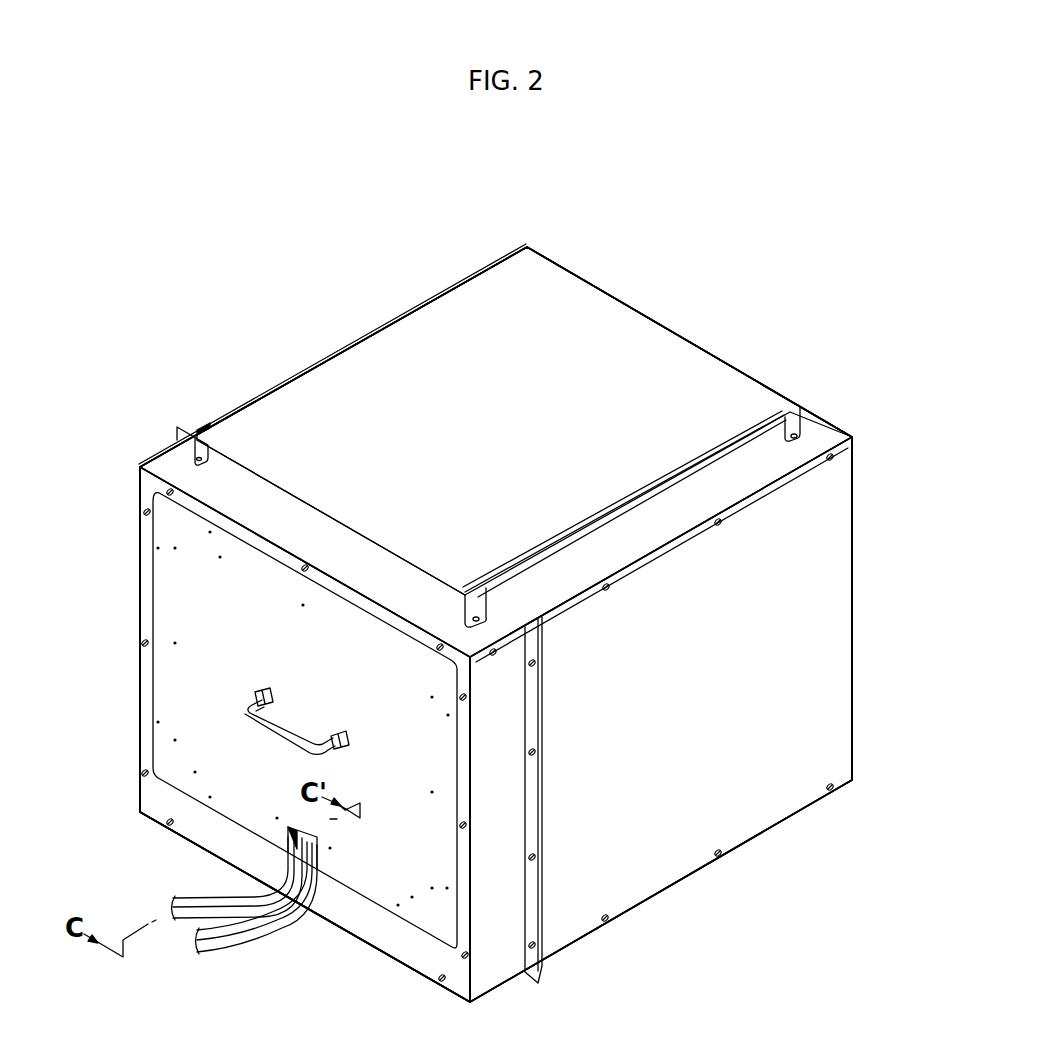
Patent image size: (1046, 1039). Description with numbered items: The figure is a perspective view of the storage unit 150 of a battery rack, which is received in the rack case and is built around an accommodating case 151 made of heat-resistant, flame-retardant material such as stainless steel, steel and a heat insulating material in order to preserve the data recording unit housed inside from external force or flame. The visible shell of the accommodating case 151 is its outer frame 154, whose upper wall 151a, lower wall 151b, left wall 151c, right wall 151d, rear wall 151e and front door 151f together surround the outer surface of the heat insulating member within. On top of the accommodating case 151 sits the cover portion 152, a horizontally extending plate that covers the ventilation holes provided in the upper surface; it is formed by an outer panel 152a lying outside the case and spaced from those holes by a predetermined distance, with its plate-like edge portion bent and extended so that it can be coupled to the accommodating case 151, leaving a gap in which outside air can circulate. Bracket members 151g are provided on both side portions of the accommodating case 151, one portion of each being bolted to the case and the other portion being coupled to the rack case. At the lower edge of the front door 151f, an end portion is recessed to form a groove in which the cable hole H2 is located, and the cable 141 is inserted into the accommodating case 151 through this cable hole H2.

The storage unit 150 is at (305, 276).
The accommodating case 151 is at (155, 443).
The upper wall 151a is at (763, 468).
The lower wall 151b is at (397, 960).
The left wall 151c is at (140, 551).
The right wall 151d is at (807, 637).
The rear wall 151e is at (853, 578).
The front door 151f is at (171, 689).
The bracket member 151g is at (173, 430).
The cover portion 152 is at (584, 298).
The outer panel 152a is at (498, 312).
The outer frame 154 is at (772, 292).
The cable 141 is at (240, 940).
The cable hole H2 is at (288, 827).